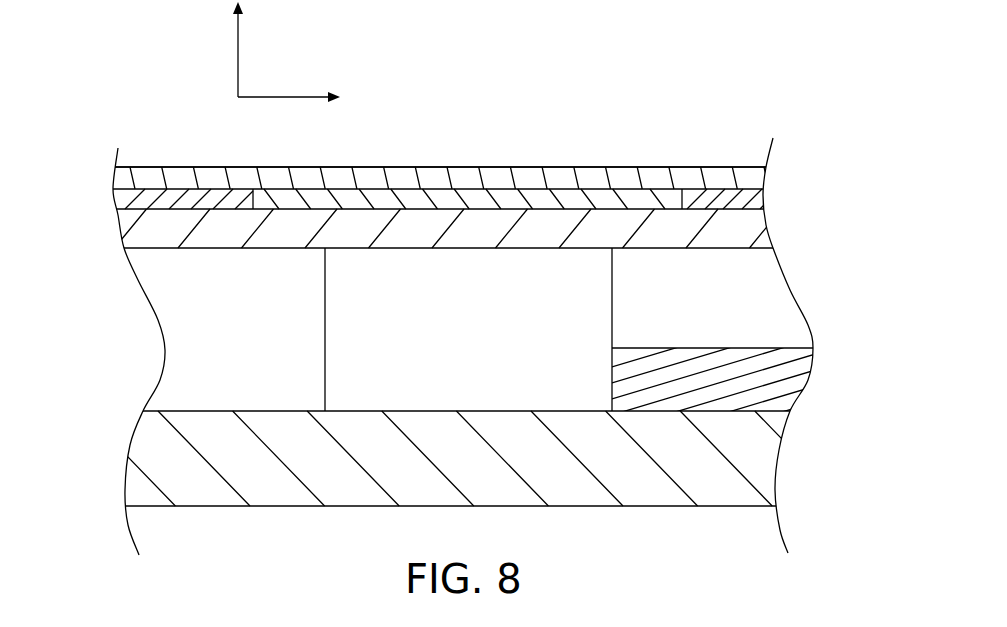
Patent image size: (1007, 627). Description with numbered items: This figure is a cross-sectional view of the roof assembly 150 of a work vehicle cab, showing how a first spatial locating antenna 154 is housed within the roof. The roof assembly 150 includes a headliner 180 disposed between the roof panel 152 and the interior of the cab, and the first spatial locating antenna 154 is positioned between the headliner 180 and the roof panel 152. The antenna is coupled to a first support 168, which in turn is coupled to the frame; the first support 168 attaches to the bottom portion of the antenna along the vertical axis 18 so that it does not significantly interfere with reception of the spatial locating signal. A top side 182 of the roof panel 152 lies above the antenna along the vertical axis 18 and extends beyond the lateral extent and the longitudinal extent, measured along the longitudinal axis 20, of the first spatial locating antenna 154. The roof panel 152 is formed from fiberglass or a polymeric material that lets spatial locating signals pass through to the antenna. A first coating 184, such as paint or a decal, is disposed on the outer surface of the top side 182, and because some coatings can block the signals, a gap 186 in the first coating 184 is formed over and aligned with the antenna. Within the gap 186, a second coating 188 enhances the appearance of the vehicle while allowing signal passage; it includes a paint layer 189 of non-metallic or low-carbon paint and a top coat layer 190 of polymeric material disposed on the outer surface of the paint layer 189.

The vertical axis 18 is at (237, 52).
The longitudinal axis 20 is at (283, 100).
The roof assembly 150 is at (86, 312).
The roof panel 152 is at (722, 236).
The first spatial locating antenna 154 is at (350, 335).
The first support 168 is at (707, 383).
The headliner 180 is at (652, 485).
The top side of the roof panel 182 is at (738, 186).
The first coating 184 is at (170, 202).
The gap 186 is at (517, 182).
The second coating 188 is at (491, 147).
The paint layer 189 is at (473, 196).
The top coat layer 190 is at (615, 174).